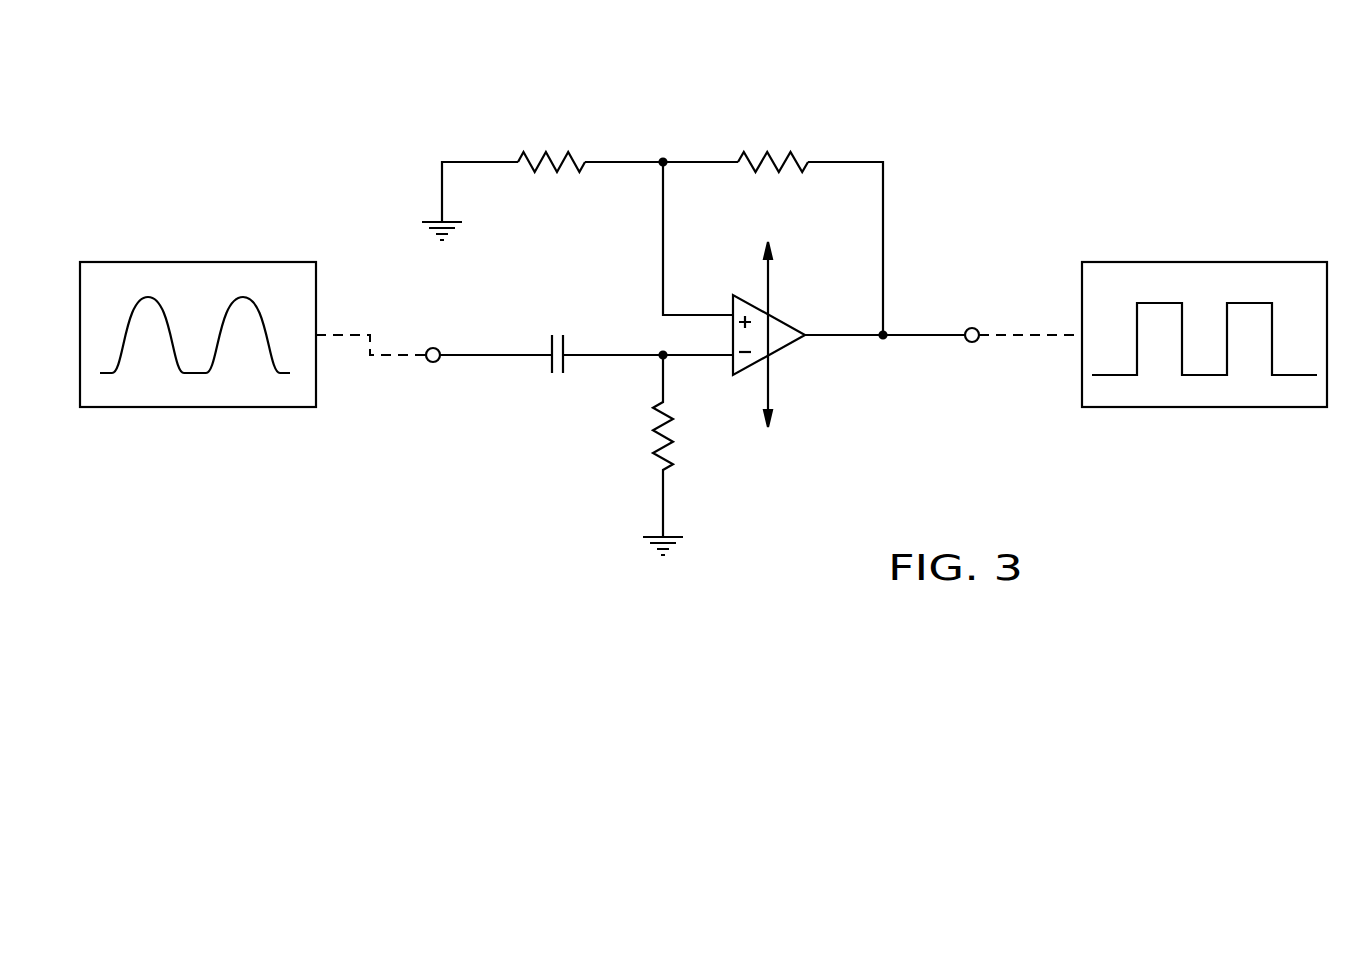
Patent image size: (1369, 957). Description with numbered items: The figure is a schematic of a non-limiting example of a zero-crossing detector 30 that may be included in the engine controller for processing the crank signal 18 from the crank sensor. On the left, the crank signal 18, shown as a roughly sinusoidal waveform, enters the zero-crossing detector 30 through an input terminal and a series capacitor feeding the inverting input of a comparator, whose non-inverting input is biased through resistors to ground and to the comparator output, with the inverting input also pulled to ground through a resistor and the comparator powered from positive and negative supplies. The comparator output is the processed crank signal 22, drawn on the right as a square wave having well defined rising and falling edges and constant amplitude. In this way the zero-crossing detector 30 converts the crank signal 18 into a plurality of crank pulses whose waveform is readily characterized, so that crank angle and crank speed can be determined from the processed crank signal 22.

The crank signal 18 is at (130, 308).
The processed crank signal 22 is at (1267, 303).
The zero-crossing detector 30 is at (895, 92).